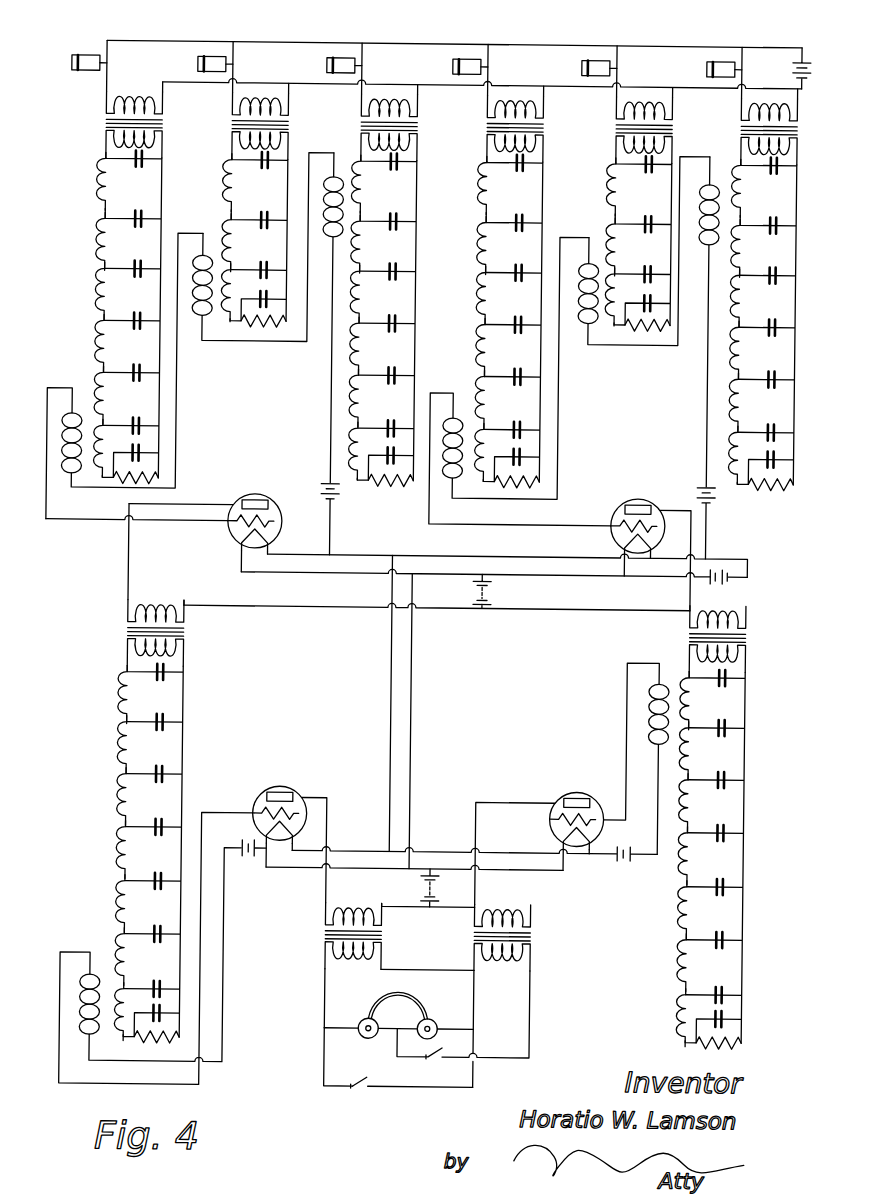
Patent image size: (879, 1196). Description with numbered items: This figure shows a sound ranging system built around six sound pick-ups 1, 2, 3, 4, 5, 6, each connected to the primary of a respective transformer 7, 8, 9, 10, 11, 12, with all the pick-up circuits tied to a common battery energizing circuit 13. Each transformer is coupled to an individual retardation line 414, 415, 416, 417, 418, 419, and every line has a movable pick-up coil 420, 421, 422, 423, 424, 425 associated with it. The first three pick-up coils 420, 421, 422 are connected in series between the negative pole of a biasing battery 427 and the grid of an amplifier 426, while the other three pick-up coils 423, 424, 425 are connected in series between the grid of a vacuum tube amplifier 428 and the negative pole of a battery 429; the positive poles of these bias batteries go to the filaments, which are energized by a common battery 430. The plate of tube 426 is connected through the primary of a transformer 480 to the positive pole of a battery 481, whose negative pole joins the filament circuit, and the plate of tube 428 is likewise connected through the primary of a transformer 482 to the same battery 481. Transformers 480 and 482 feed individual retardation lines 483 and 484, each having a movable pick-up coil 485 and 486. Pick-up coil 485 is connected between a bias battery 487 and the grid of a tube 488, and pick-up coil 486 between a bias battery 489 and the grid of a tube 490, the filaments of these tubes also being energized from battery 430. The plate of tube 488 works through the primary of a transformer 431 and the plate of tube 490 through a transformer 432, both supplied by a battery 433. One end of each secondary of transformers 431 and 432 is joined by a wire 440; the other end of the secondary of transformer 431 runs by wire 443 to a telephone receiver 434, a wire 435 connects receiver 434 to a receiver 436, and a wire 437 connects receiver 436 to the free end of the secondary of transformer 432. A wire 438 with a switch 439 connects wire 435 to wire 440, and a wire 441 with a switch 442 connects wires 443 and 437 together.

The sound pick-up 1 is at (81, 66).
The sound pick-up 2 is at (206, 68).
The sound pick-up 3 is at (335, 70).
The sound pick-up 4 is at (457, 71).
The sound pick-up 5 is at (587, 72).
The sound pick-up 6 is at (715, 75).
The transformer 7 is at (101, 129).
The transformer 8 is at (227, 129).
The transformer 9 is at (356, 129).
The transformer 10 is at (482, 129).
The transformer 11 is at (611, 129).
The transformer 12 is at (736, 129).
The common battery energizing circuit 13 is at (719, 67).
The retardation line 414 is at (158, 198).
The retardation line 415 is at (283, 199).
The retardation line 416 is at (412, 202).
The retardation line 417 is at (538, 204).
The retardation line 418 is at (667, 199).
The retardation line 419 is at (792, 197).
The movable pick-up coil 420 is at (65, 410).
The movable pick-up coil 421 is at (199, 332).
The movable pick-up coil 422 is at (318, 240).
The movable pick-up coil 423 is at (454, 418).
The movable pick-up coil 424 is at (585, 332).
The movable pick-up coil 425 is at (705, 246).
The amplifier 426 is at (227, 541).
The biasing battery 427 is at (321, 486).
The vacuum tube amplifier 428 is at (640, 502).
The battery 429 is at (688, 508).
The common battery 430 is at (736, 587).
The battery 481 is at (463, 595).
The transformer 480 is at (128, 634).
The transformer 482 is at (746, 637).
The retardation line 483 is at (184, 710).
The retardation line 484 is at (746, 702).
The movable pick-up coil 485 is at (90, 976).
The movable pick-up coil 486 is at (650, 687).
The bias battery 487 is at (250, 862).
The tube 488 is at (282, 797).
The bias battery 489 is at (626, 862).
The tube 490 is at (573, 798).
The battery 433 is at (424, 894).
The transformer 431 is at (329, 951).
The transformer 432 is at (534, 951).
The wire 440 is at (428, 970).
The wire 443 is at (329, 997).
The wire 441 is at (329, 1076).
The switch 442 is at (368, 1092).
The wire 437 is at (480, 992).
The wire 438 is at (534, 1016).
The switch 439 is at (443, 1062).
The telephone receiver 434 is at (368, 1039).
The receiver 436 is at (440, 1021).
The wire 435 is at (392, 1037).